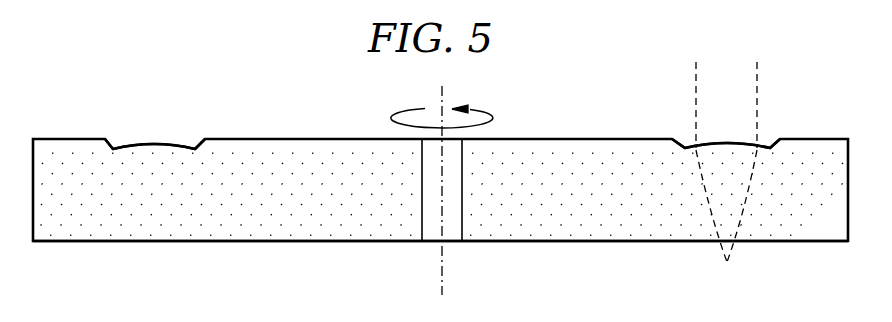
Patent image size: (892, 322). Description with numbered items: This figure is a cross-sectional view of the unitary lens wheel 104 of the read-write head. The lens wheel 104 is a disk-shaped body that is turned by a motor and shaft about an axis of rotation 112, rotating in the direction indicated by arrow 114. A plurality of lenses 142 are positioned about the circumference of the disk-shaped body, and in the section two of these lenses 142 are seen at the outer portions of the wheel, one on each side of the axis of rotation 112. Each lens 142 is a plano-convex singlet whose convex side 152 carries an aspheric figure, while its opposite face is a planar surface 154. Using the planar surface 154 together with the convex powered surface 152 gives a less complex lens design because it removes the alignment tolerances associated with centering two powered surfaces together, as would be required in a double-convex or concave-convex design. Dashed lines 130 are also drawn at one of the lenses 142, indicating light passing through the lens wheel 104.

The lens wheel 104 is at (218, 87).
The axis of rotation 112 is at (443, 262).
The arrow 114 is at (468, 109).
The laser beam 130 is at (757, 74).
The lens 142 is at (159, 124).
The convex side 152 is at (130, 144).
The planar surface 154 is at (186, 243).